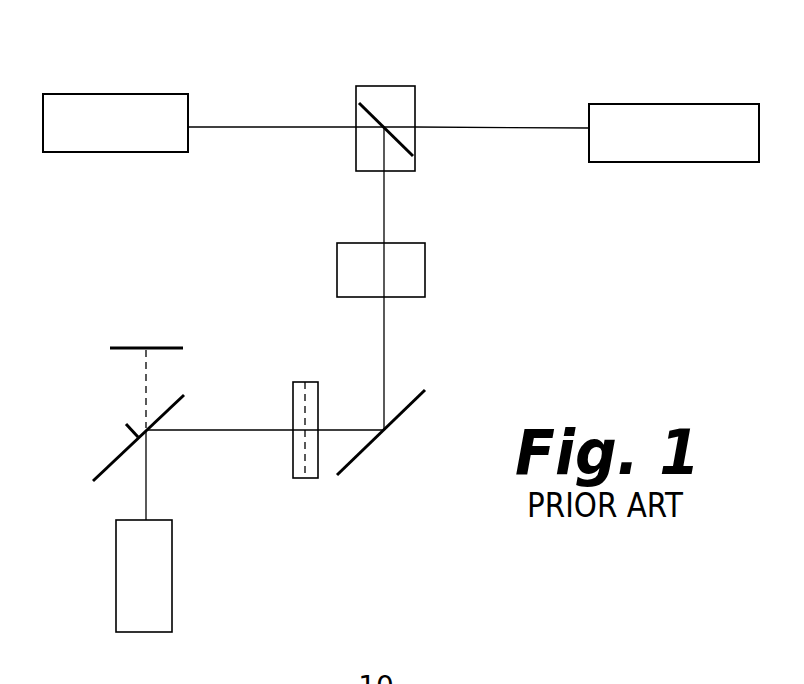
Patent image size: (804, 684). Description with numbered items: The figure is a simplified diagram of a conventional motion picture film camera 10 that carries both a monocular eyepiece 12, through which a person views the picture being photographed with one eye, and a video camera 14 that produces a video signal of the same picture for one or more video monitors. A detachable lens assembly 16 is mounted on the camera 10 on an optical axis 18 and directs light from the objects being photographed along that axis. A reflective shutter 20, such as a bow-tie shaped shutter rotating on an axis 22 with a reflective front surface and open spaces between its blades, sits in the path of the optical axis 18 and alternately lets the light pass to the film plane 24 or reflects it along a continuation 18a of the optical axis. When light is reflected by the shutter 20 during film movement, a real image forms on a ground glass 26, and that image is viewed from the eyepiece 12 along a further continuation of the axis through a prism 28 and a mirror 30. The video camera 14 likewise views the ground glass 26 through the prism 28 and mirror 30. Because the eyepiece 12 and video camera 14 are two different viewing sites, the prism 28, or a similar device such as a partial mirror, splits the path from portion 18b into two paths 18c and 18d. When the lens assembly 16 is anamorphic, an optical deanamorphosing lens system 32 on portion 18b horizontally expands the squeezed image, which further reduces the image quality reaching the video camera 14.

The motion picture film camera 10 is at (162, 265).
The monocular eyepiece 12 is at (636, 103).
The video camera 14 is at (111, 93).
The detachable lens assembly 16 is at (172, 606).
The optical axis 18 is at (148, 490).
The continuation of the optical axis 18a is at (219, 429).
The portion of the optical path 18b is at (385, 216).
The optical path 18c is at (530, 126).
The optical path 18d is at (288, 125).
The reflective shutter 20 is at (118, 456).
The axis 22 is at (132, 433).
The film plane 24 is at (127, 351).
The ground glass 26 is at (310, 479).
The prism 28 is at (395, 85).
The mirror 30 is at (402, 410).
The optical deanamorphosing lens system 32 is at (425, 268).